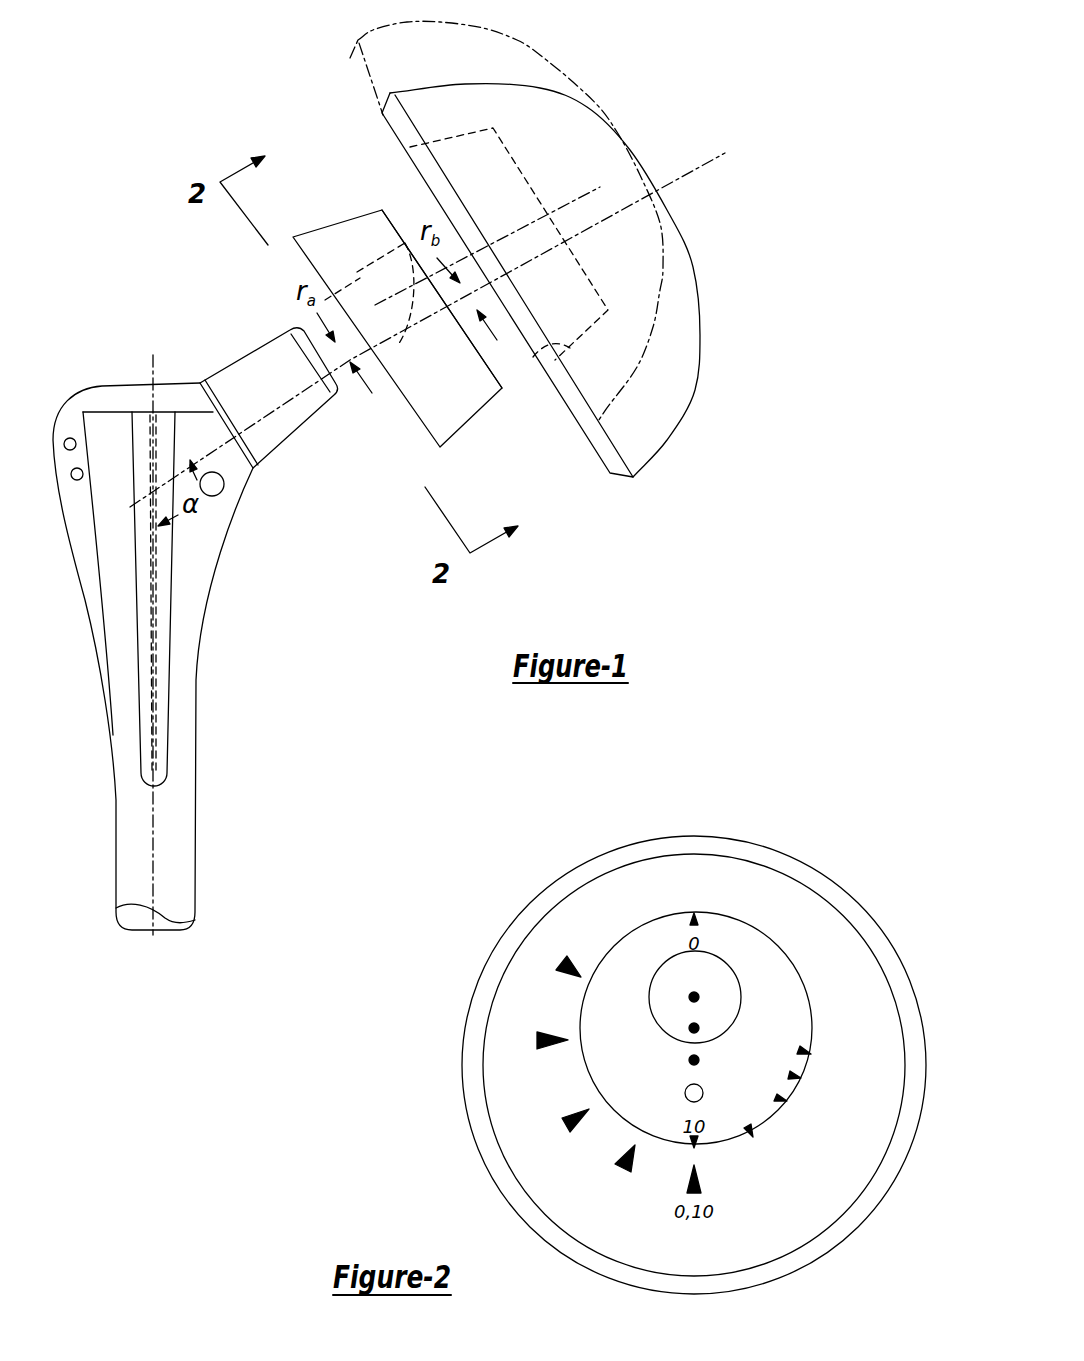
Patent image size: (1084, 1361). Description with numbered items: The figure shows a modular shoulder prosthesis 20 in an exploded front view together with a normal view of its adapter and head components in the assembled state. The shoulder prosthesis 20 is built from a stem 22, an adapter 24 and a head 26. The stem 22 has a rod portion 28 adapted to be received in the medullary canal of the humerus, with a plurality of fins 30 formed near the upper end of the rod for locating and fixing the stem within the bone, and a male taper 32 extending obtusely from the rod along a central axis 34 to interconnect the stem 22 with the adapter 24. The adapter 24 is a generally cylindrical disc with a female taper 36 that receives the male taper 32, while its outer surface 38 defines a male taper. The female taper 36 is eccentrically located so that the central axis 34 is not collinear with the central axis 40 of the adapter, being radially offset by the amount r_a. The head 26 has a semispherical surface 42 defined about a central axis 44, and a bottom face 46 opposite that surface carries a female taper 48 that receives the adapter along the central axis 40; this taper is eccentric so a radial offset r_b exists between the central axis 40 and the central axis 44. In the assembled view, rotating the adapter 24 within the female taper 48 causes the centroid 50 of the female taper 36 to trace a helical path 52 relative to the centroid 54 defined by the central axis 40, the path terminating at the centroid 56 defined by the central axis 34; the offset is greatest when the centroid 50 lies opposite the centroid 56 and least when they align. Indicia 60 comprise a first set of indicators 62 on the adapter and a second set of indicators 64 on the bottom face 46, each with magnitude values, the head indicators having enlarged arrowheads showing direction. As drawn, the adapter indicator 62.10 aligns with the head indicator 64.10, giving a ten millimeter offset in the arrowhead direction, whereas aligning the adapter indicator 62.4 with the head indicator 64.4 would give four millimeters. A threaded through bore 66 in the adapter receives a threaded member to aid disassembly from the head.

In FIG. 1, the shoulder prosthesis 20 is at (152, 293).
In FIG. 1, the stem 22 is at (103, 800).
In FIG. 1, the adapter 24 is at (432, 422).
In FIG. 2, the adapter 24 is at (777, 967).
In FIG. 1, the head 26 is at (657, 260).
In FIG. 2, the head 26 is at (717, 867).
In FIG. 1, the rod portion 28 is at (183, 832).
In FIG. 1, the fins 30 is at (95, 583).
In FIG. 1, the male taper 32 is at (263, 433).
In FIG. 1, the central axis 34 is at (290, 345).
In FIG. 1, the female taper 36 is at (370, 258).
In FIG. 1, the outer surface 38 is at (453, 437).
In FIG. 1, the central axis 40 is at (397, 342).
In FIG. 1, the semispherical surface 42 is at (697, 373).
In FIG. 1, the central axis 44 is at (682, 175).
In FIG. 1, the bottom face 46 is at (593, 453).
In FIG. 1, the female taper 48 is at (533, 357).
In FIG. 2, the centroid 50 is at (696, 995).
In FIG. 2, the helical path 52 is at (694, 1028).
In FIG. 2, the centroid 54 is at (690, 1030).
In FIG. 2, the centroid 56 is at (690, 1062).
In FIG. 2, the indicia 60 is at (818, 1169).
In FIG. 2, the first set of indicators 62 is at (815, 1028).
In FIG. 2, the adapter indicator 62.4 is at (810, 1083).
In FIG. 2, the adapter indicator 62.10 is at (705, 1142).
In FIG. 2, the second set of indicators 64 is at (580, 945).
In FIG. 2, the head indicator 64.4 is at (548, 1047).
In FIG. 2, the head indicator 64.10 is at (688, 1178).
In FIG. 2, the threaded through bore 66 is at (686, 1093).